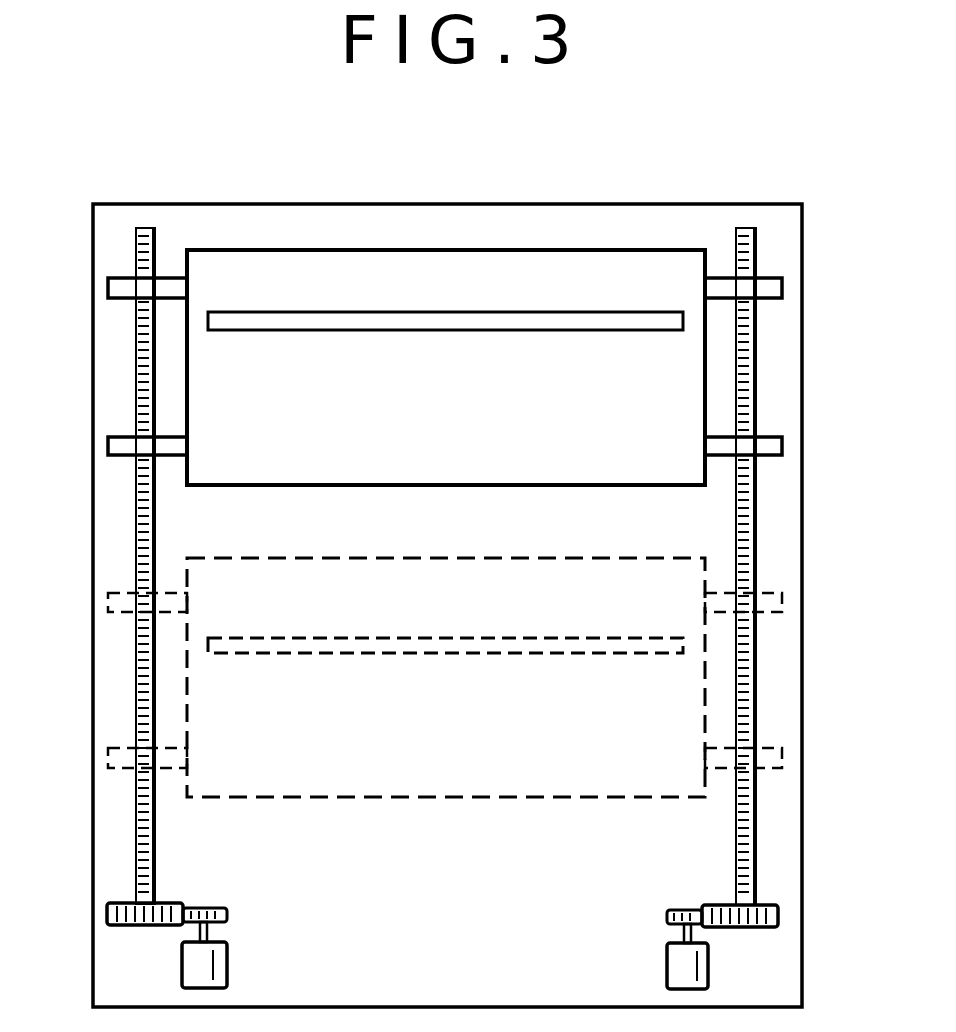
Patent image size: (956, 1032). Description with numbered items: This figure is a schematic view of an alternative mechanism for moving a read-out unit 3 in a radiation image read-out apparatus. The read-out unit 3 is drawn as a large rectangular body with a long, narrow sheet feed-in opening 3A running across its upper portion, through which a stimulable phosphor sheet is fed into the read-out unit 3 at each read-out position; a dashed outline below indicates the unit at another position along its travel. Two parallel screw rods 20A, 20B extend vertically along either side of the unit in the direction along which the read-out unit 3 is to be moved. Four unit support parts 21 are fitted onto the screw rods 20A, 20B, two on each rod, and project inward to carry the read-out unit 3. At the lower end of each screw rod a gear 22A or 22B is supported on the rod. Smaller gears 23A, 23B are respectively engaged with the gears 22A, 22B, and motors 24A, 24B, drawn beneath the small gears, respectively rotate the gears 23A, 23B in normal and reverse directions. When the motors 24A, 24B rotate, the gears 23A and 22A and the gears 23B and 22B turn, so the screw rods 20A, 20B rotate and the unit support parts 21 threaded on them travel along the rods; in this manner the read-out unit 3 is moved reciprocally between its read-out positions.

The read-out unit 3 is at (489, 250).
The sheet feed-in opening 3A is at (574, 312).
The screw rod 20A is at (148, 228).
The screw rod 20B is at (750, 228).
The unit support part 21 is at (108, 282).
The gear 22A is at (107, 915).
The gear 22B is at (778, 928).
The gear 23A is at (228, 908).
The gear 23B is at (666, 910).
The motor 24A is at (227, 972).
The motor 24B is at (672, 966).